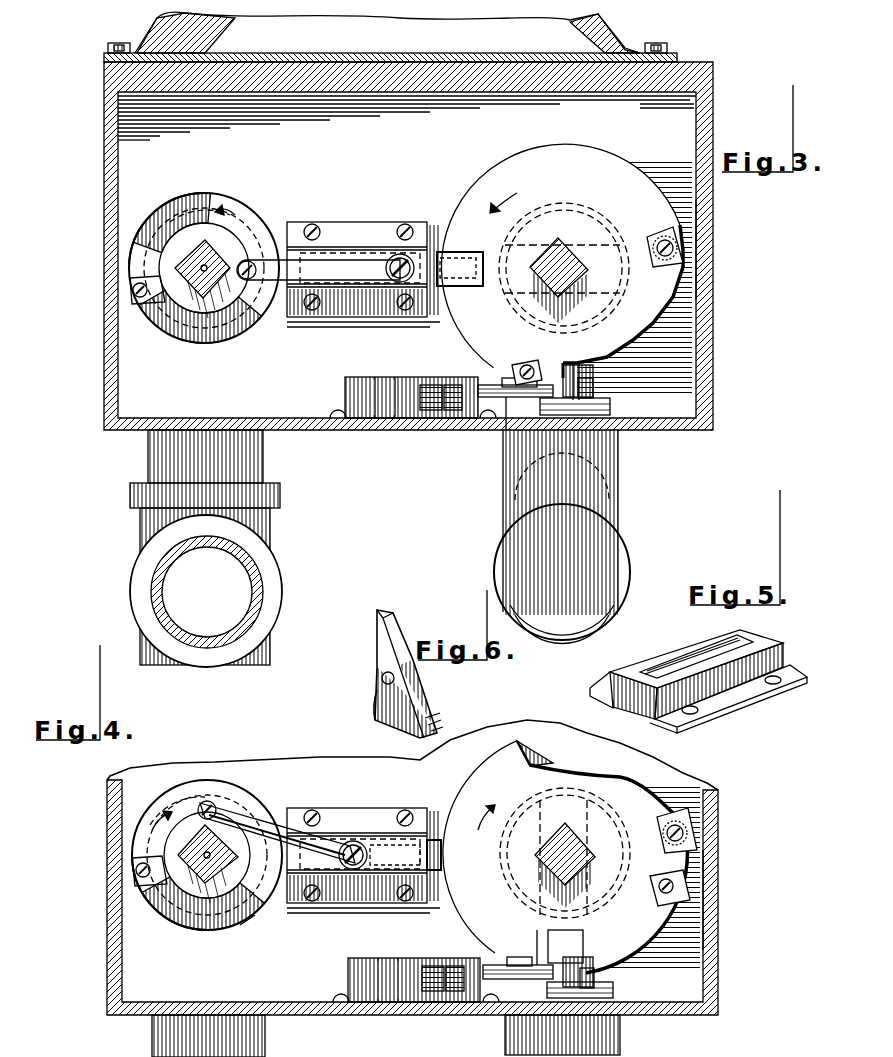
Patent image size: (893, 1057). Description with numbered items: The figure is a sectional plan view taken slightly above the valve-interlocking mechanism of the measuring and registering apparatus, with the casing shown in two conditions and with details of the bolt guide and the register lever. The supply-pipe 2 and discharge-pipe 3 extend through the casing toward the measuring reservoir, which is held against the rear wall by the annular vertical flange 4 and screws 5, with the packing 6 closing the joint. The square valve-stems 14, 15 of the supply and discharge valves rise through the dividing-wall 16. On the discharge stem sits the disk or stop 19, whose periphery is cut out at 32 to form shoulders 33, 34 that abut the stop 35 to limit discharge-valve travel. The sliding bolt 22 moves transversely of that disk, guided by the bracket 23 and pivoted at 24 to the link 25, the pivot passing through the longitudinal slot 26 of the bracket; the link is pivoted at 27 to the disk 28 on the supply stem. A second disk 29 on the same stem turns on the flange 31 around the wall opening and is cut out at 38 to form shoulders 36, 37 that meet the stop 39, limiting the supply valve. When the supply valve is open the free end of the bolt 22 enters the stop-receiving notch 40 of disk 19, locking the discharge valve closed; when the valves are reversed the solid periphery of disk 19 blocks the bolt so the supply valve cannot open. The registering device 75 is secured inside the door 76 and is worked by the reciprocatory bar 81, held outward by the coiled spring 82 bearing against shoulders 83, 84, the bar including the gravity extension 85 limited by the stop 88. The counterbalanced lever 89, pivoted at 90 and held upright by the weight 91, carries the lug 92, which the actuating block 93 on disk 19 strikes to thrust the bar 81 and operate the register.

In FIG. 3, the supply-pipe 2 is at (130, 585).
In FIG. 4, the supply-pipe 2 is at (152, 1045).
In FIG. 3, the discharge-pipe 3 is at (618, 445).
In FIG. 4, the discharge-pipe 3 is at (622, 1045).
In FIG. 3, the annular vertical flange 4 is at (104, 57).
In FIG. 3, the screws 5 is at (118, 46).
In FIG. 3, the packing 6 is at (478, 66).
In FIG. 3, the valve-stem of supply-valve 14 is at (195, 300).
In FIG. 4, the valve-stem of supply-valve 14 is at (197, 898).
In FIG. 3, the valve-stem of discharge-valve 15 is at (557, 240).
In FIG. 4, the valve-stem of discharge-valve 15 is at (535, 860).
In FIG. 3, the dividing-wall 16 is at (289, 150).
In FIG. 4, the dividing-wall 16 is at (412, 867).
In FIG. 3, the disk or stop 19 is at (600, 160).
In FIG. 4, the disk or stop 19 is at (470, 790).
In FIG. 3, the sliding bolt 22 is at (470, 272).
In FIG. 4, the sliding bolt 22 is at (441, 855).
In FIG. 3, the bracket 23 is at (338, 222).
In FIG. 5, the bracket 23 is at (648, 665).
In FIG. 4, the bracket 23 is at (345, 808).
In FIG. 3, the pivot 24 is at (385, 290).
In FIG. 4, the pivot 24 is at (345, 875).
In FIG. 3, the link 25 is at (292, 302).
In FIG. 4, the link 25 is at (300, 830).
In FIG. 3, the longitudinal slot 26 is at (458, 268).
In FIG. 5, the longitudinal slot 26 is at (688, 660).
In FIG. 4, the longitudinal slot 26 is at (410, 840).
In FIG. 3, the pivot 27 is at (255, 262).
In FIG. 4, the pivot 27 is at (210, 800).
In FIG. 3, the disk 28 is at (240, 240).
In FIG. 4, the disk 28 is at (185, 830).
In FIG. 3, the second disk 29 is at (205, 325).
In FIG. 4, the second disk 29 is at (160, 790).
In FIG. 3, the flange 31 is at (180, 200).
In FIG. 4, the flange 31 is at (205, 930).
In FIG. 3, the cut-out 32 is at (640, 325).
In FIG. 4, the cut-out 32 is at (625, 795).
In FIG. 3, the shoulder 33 is at (562, 360).
In FIG. 4, the shoulder 33 is at (700, 848).
In FIG. 3, the shoulder 34 is at (652, 235).
In FIG. 4, the shoulder 34 is at (535, 745).
In FIG. 3, the stop 35 is at (713, 245).
In FIG. 4, the stop 35 is at (718, 798).
In FIG. 3, the shoulder 36 is at (158, 304).
In FIG. 4, the shoulder 36 is at (240, 925).
In FIG. 3, the shoulder 37 is at (220, 200).
In FIG. 4, the shoulder 37 is at (135, 850).
In FIG. 3, the cut-out 38 is at (160, 222).
In FIG. 4, the cut-out 38 is at (180, 900).
In FIG. 3, the stop 39 is at (133, 290).
In FIG. 4, the stop 39 is at (133, 880).
In FIG. 3, the stop-receiving notch 40 is at (460, 250).
In FIG. 4, the stop-receiving notch 40 is at (585, 935).
In FIG. 3, the registering device 75 is at (345, 385).
In FIG. 4, the registering device 75 is at (348, 970).
In FIG. 3, the door 76 is at (420, 430).
In FIG. 4, the door 76 is at (355, 1015).
In FIG. 3, the reciprocatory bar 81 is at (480, 385).
In FIG. 4, the reciprocatory bar 81 is at (490, 965).
In FIG. 3, the coiled spring 82 is at (420, 385).
In FIG. 4, the coiled spring 82 is at (440, 1002).
In FIG. 3, the shoulder 83 is at (390, 430).
In FIG. 4, the shoulder 83 is at (397, 962).
In FIG. 3, the shoulder 84 is at (450, 385).
In FIG. 4, the shoulder 84 is at (462, 1002).
In FIG. 3, the gravity extension 85 is at (505, 432).
In FIG. 4, the gravity extension 85 is at (537, 940).
In FIG. 3, the stop 88 is at (512, 378).
In FIG. 4, the stop 88 is at (522, 957).
In FIG. 3, the counterbalanced lever 89 is at (594, 388).
In FIG. 6, the counterbalanced lever 89 is at (375, 667).
In FIG. 4, the counterbalanced lever 89 is at (596, 975).
In FIG. 3, the pivot 90 is at (594, 375).
In FIG. 4, the pivot 90 is at (593, 960).
In FIG. 3, the weight 91 is at (612, 405).
In FIG. 6, the weight 91 is at (437, 715).
In FIG. 4, the weight 91 is at (614, 990).
In FIG. 6, the lug 92 is at (375, 700).
In FIG. 3, the actuating device or block 93 is at (527, 365).
In FIG. 4, the actuating device or block 93 is at (655, 893).